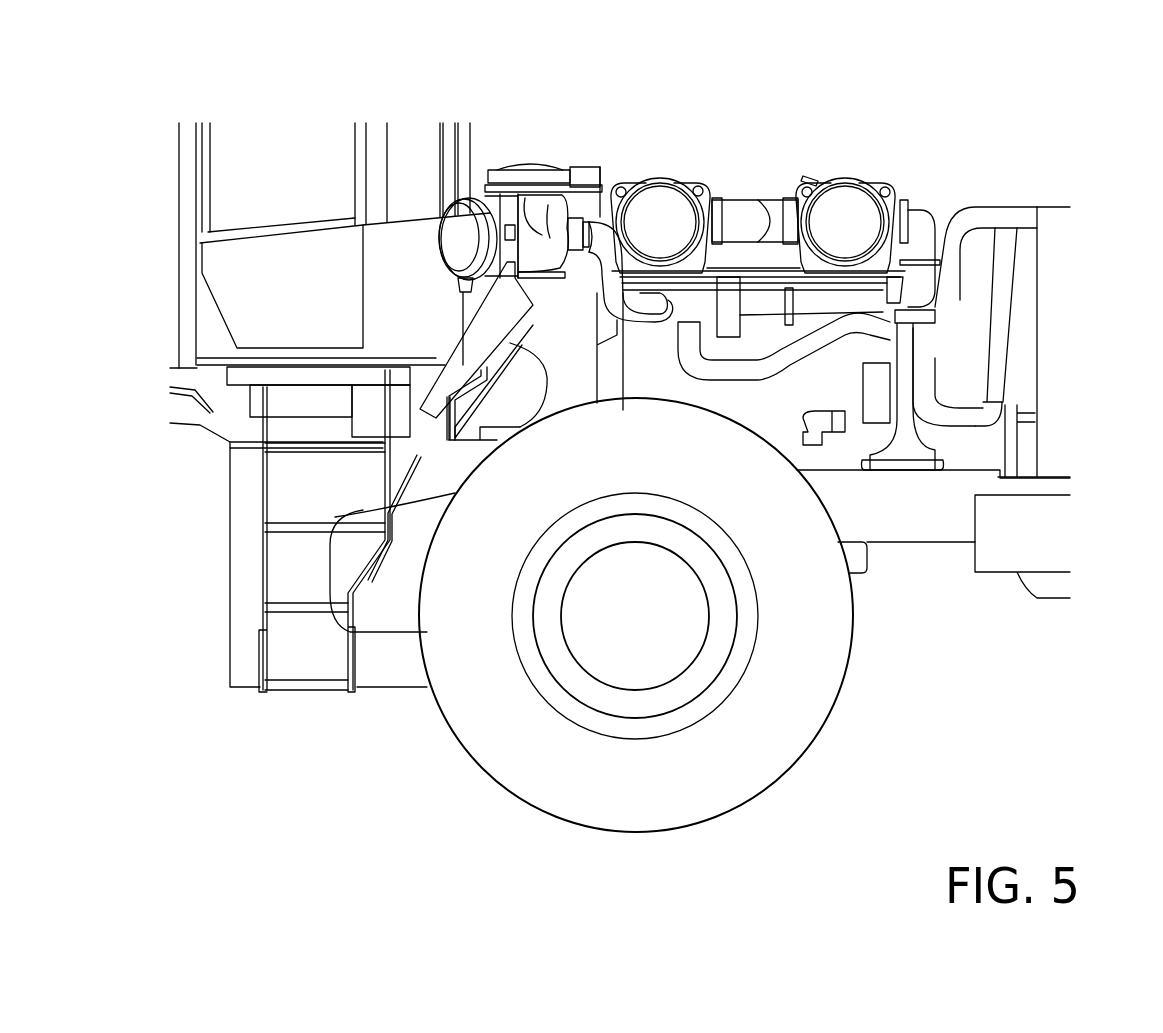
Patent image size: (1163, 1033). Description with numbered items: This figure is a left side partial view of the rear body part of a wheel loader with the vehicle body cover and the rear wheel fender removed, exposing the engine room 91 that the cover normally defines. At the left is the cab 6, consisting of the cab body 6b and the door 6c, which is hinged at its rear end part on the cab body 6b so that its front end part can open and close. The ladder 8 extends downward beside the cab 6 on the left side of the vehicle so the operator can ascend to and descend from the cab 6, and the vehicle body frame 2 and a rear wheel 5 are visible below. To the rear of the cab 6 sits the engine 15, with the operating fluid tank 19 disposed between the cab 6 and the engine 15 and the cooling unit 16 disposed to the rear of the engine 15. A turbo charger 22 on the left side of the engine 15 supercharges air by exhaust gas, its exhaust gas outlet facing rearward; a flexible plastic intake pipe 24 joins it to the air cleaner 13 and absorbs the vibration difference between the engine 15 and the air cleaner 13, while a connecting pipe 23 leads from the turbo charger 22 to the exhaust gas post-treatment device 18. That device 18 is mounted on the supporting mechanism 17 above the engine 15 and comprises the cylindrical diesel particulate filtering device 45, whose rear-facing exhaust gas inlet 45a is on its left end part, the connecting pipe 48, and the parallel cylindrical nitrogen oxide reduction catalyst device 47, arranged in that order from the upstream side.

The vehicle body frame 2 is at (950, 528).
The rear wheels 5 is at (496, 736).
The cab 6 is at (341, 103).
The cab body 6b is at (410, 292).
The door 6c is at (248, 165).
The ladder 8 is at (263, 503).
The air cleaner 13 is at (529, 144).
The engine 15 is at (786, 262).
The cooling unit 16 is at (1092, 192).
The supporting mechanism 17 is at (946, 362).
The exhaust gas post-treatment device 18 is at (811, 141).
The operating fluid tank 19 is at (583, 168).
The turbo charger 22 is at (732, 280).
The connecting pipe 23 is at (946, 291).
The intake pipe 24 is at (603, 172).
The diesel particulate filtering device 45 is at (855, 164).
The exhaust gas inlet 45a is at (900, 197).
The nitrogen oxide reduction catalyst device 47 is at (664, 164).
The connecting pipe 48 is at (748, 188).
The engine room 91 is at (776, 160).